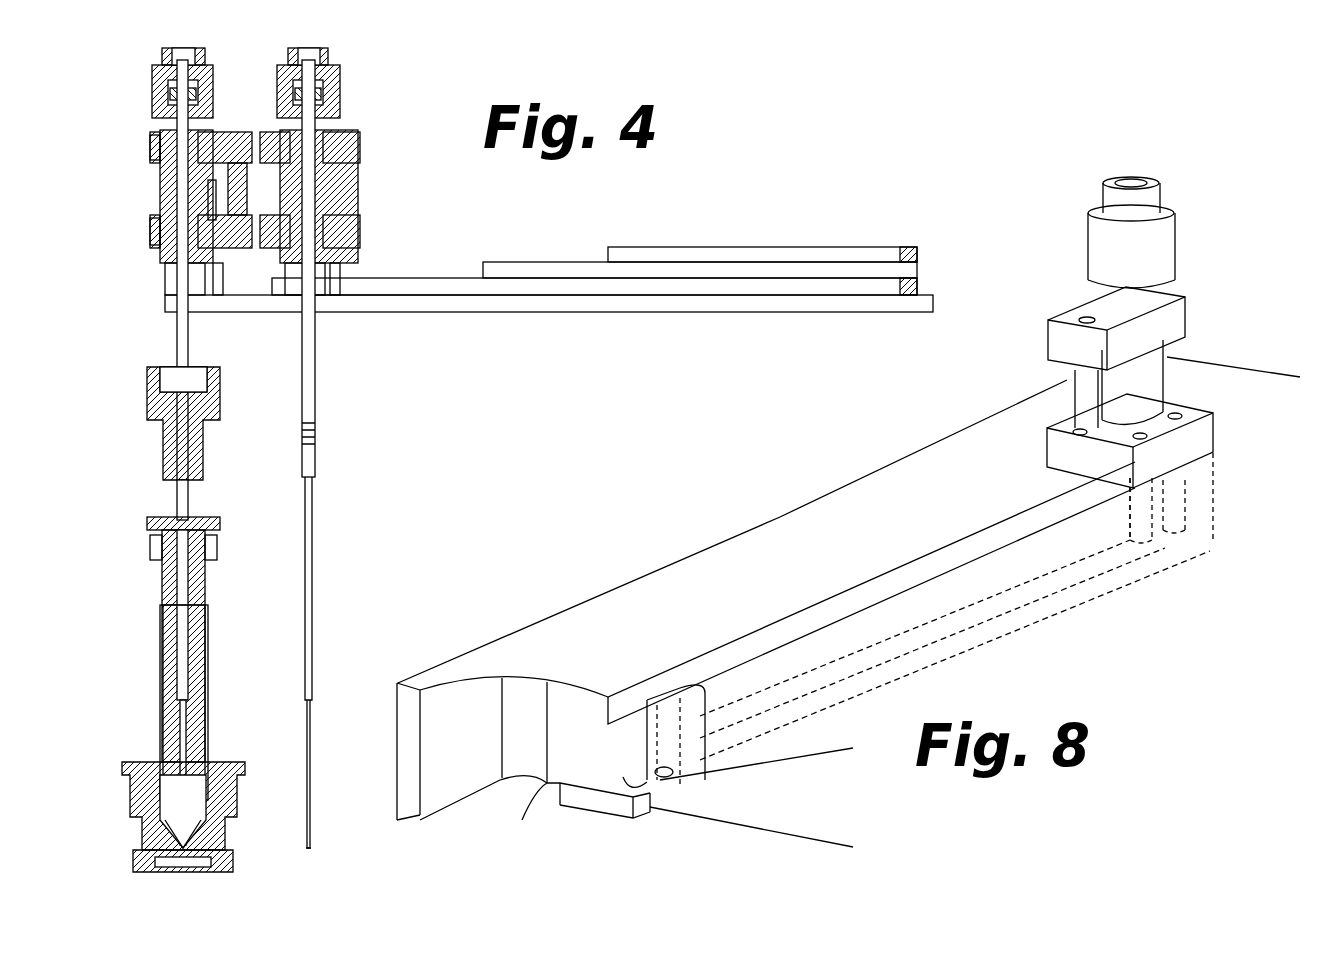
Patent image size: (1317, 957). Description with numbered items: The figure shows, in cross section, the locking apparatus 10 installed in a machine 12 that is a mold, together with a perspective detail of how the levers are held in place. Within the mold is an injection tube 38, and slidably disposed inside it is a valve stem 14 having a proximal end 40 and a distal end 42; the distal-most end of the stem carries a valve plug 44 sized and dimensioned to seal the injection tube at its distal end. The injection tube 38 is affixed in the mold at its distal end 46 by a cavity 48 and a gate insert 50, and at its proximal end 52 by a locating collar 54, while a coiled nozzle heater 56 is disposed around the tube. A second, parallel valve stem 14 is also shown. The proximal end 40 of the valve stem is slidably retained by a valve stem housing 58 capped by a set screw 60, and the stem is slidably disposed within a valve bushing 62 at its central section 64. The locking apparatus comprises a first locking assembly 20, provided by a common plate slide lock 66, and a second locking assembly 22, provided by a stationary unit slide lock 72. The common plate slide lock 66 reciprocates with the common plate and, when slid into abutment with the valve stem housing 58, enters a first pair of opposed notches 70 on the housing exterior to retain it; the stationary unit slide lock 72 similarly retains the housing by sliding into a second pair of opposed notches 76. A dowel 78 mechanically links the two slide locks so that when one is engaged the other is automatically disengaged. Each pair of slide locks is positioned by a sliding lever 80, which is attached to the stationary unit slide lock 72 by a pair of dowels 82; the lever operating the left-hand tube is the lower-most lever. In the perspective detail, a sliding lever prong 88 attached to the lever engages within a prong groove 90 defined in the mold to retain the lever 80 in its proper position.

In FIG. 4, the locking apparatus 10 is at (160, 180).
In FIG. 8, the machine 12 is at (740, 515).
In FIG. 4, the valve stem 14 is at (175, 350).
In FIG. 4, the first locking assembly 20 is at (152, 140).
In FIG. 4, the second locking assembly 22 is at (152, 245).
In FIG. 4, the injection tube 38 is at (205, 580).
In FIG. 4, the proximal end 40 is at (190, 93).
In FIG. 4, the distal end 42 is at (200, 830).
In FIG. 4, the valve plug 44 is at (311, 850).
In FIG. 4, the distal end 46 is at (233, 855).
In FIG. 4, the cavity 48 is at (170, 868).
In FIG. 4, the gate insert 50 is at (135, 826).
In FIG. 4, the proximal end 52 is at (205, 517).
In FIG. 4, the locating collar 54 is at (152, 545).
In FIG. 4, the coiled nozzle heater 56 is at (208, 693).
In FIG. 4, the valve stem housing 58 is at (152, 82).
In FIG. 8, the valve stem housing 58 is at (1185, 355).
In FIG. 4, the set screw 60 is at (162, 56).
In FIG. 8, the set screw 60 is at (1131, 195).
In FIG. 4, the valve bushing 62 is at (147, 400).
In FIG. 4, the central section 64 is at (210, 400).
In FIG. 4, the common plate slide lock 66 is at (150, 150).
In FIG. 8, the common plate slide lock 66 is at (1048, 340).
In FIG. 4, the first pair of opposed notches 70 is at (232, 150).
In FIG. 4, the stationary unit slide lock 72 is at (152, 232).
In FIG. 8, the stationary unit slide lock 72 is at (1048, 455).
In FIG. 4, the second pair of opposed notches 76 is at (213, 275).
In FIG. 4, the dowel 78 is at (213, 200).
In FIG. 8, the dowel 78 is at (1085, 385).
In FIG. 4, the sliding lever 80 is at (917, 287).
In FIG. 8, the sliding lever 80 is at (1070, 595).
In FIG. 4, the dowels 82 is at (172, 300).
In FIG. 8, the dowels 82 is at (1130, 515).
In FIG. 8, the sliding lever prong 88 is at (668, 782).
In FIG. 8, the prong groove 90 is at (695, 786).